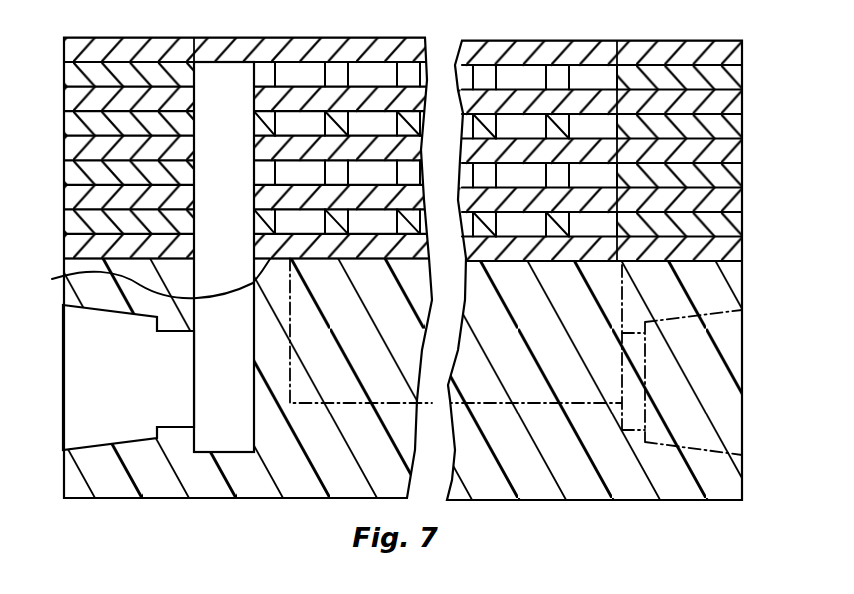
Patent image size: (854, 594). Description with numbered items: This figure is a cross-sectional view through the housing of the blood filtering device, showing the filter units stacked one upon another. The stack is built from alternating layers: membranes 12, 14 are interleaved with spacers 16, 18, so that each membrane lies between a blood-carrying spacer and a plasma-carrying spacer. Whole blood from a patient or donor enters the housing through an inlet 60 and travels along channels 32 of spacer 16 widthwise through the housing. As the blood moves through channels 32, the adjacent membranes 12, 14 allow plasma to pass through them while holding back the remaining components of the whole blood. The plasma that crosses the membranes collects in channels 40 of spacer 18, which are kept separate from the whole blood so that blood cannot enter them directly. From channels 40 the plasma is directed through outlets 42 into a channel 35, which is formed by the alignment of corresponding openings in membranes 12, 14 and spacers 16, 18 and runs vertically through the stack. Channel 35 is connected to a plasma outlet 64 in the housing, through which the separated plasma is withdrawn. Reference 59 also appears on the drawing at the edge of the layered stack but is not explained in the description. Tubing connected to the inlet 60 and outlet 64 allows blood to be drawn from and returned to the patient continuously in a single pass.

The membrane 12 is at (733, 106).
The membrane 14 is at (733, 155).
The spacer 16 is at (733, 178).
The spacer 18 is at (732, 227).
The channels of spacer 32 is at (598, 172).
The channel 35 is at (144, 278).
The channels of spacer 40 is at (378, 223).
The outlets 42 is at (270, 74).
The multilayer structure edge 59 is at (752, 212).
The inlet 60 is at (718, 384).
The plasma outlet 64 is at (75, 373).